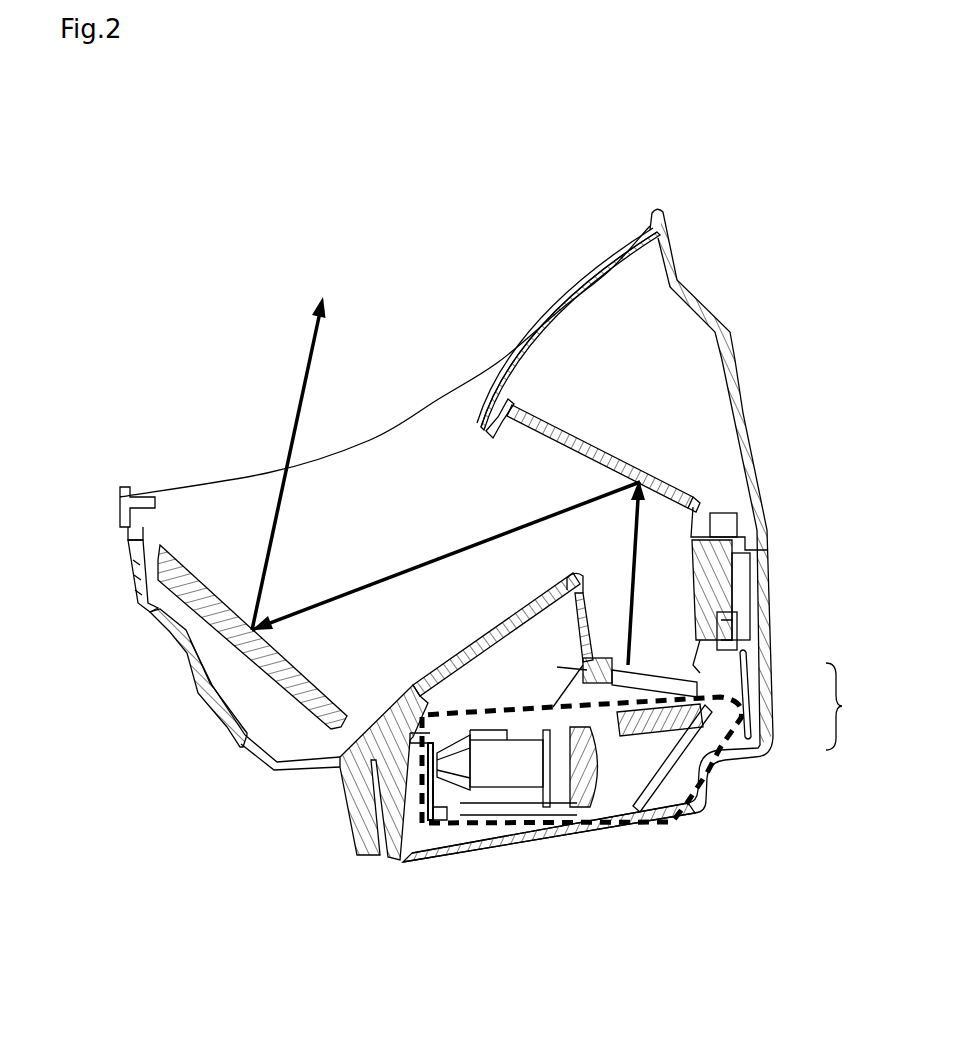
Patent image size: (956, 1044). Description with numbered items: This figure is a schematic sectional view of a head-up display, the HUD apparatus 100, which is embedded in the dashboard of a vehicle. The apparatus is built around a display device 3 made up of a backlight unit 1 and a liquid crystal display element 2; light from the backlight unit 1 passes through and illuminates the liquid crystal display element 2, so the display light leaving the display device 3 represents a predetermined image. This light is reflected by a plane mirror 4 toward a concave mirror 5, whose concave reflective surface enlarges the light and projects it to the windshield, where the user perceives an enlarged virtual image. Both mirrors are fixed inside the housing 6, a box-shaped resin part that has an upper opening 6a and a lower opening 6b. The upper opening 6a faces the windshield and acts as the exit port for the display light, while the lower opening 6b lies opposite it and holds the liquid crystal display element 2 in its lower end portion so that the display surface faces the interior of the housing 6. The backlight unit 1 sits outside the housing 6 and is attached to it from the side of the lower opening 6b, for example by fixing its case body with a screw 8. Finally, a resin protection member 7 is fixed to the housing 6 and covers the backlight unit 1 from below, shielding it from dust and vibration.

The HUD apparatus 100 is at (167, 321).
The backlight unit 1 is at (740, 728).
The liquid crystal display element 2 is at (690, 673).
The display device 3 is at (842, 706).
The plane mirror 4 is at (627, 460).
The concave mirror 5 is at (293, 677).
The housing 6 is at (187, 655).
The upper opening 6a is at (153, 517).
The lower opening 6b is at (588, 642).
The protection member 7 is at (463, 853).
The screw 8 is at (732, 625).